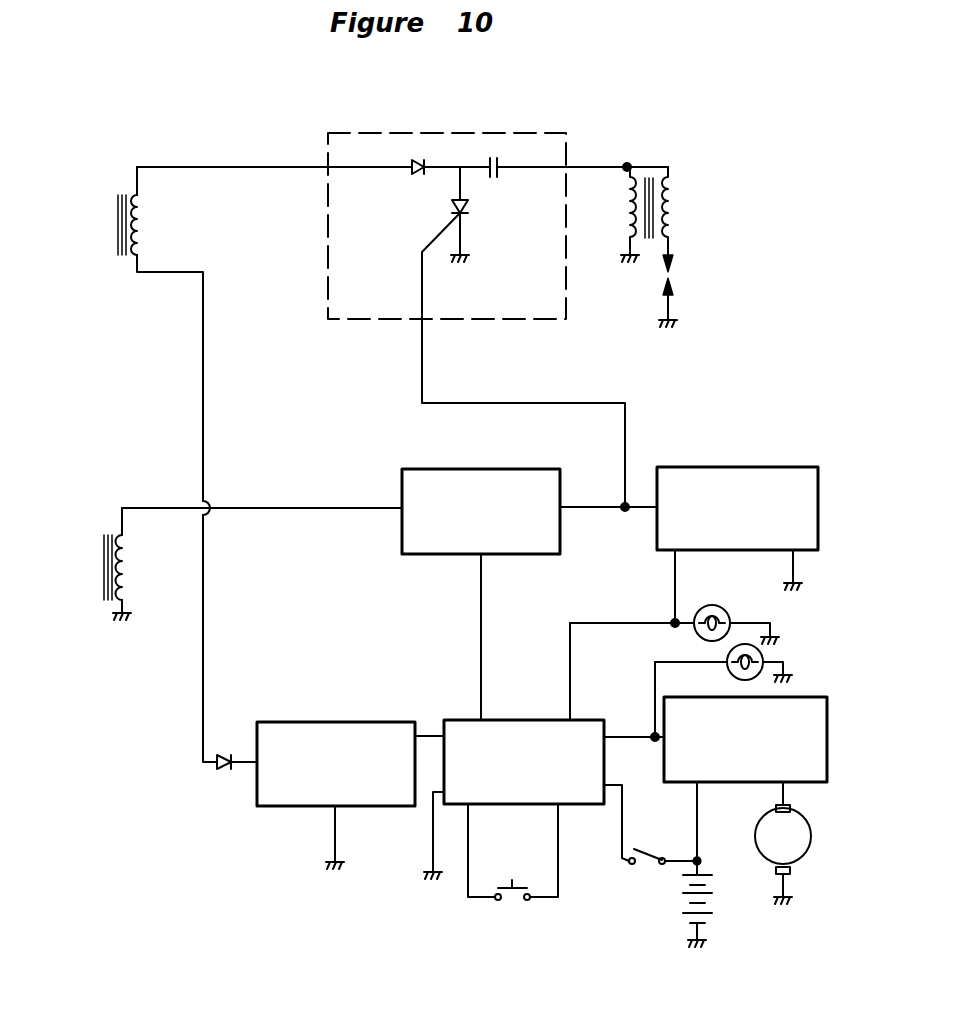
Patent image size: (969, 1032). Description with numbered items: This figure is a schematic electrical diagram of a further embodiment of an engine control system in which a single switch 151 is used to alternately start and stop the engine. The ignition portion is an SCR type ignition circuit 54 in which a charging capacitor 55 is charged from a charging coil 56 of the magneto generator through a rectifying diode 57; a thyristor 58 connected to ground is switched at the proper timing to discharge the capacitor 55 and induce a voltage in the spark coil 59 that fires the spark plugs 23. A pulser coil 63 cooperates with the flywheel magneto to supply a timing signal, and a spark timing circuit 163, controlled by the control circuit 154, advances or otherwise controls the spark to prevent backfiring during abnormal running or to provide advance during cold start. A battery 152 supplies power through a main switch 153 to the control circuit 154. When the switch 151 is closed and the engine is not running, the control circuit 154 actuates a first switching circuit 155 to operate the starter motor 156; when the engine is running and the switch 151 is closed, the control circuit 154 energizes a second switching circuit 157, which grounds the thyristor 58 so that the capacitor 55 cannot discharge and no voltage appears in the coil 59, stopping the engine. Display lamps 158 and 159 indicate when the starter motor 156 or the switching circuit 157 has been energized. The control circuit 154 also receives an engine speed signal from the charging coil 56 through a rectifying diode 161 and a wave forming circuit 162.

The spark plugs 23 is at (668, 272).
The ignition circuit 54 is at (566, 304).
The charging capacitor 55 is at (494, 178).
The charging coil 56 is at (143, 201).
The rectifying diode 57 is at (416, 176).
The thyristor 58 is at (466, 207).
The spark coil 59 is at (645, 153).
The pulser coil 63 is at (135, 563).
The single switch 151 is at (512, 900).
The battery 152 is at (715, 893).
The main switch 153 is at (645, 868).
The control circuit 154 is at (532, 718).
The first switching circuit 155 is at (690, 784).
The starter motor 156 is at (755, 837).
The second switching circuit 157 is at (718, 466).
The display lamp 158 is at (726, 673).
The display lamp 159 is at (720, 604).
The rectifying diode 161 is at (222, 768).
The wave forming circuit 162 is at (295, 722).
The spark timing circuit 163 is at (538, 469).